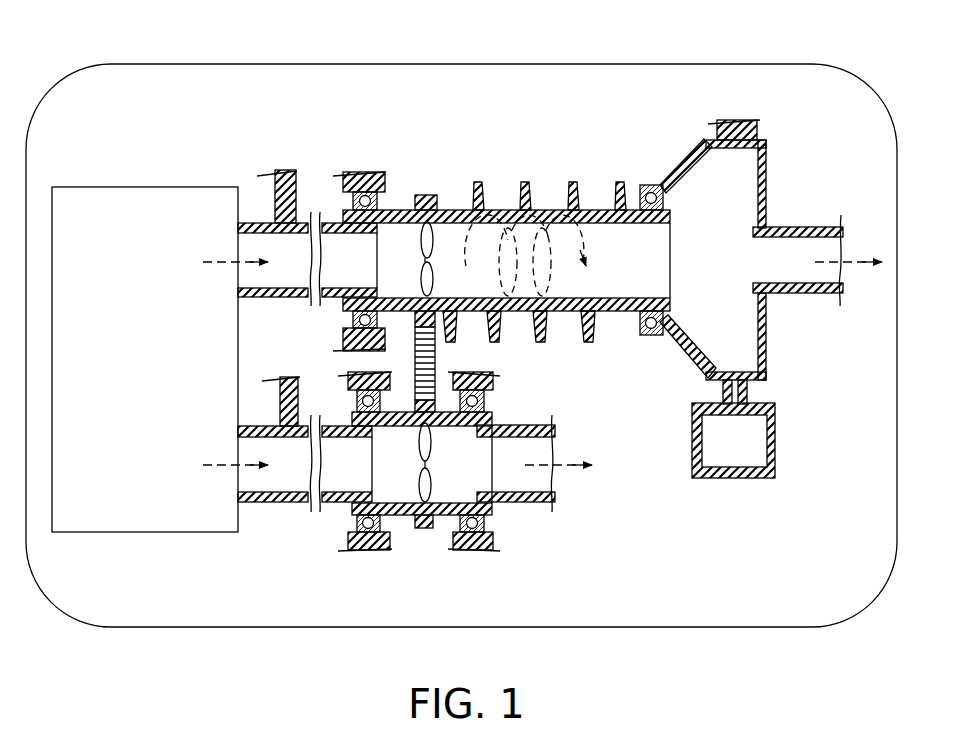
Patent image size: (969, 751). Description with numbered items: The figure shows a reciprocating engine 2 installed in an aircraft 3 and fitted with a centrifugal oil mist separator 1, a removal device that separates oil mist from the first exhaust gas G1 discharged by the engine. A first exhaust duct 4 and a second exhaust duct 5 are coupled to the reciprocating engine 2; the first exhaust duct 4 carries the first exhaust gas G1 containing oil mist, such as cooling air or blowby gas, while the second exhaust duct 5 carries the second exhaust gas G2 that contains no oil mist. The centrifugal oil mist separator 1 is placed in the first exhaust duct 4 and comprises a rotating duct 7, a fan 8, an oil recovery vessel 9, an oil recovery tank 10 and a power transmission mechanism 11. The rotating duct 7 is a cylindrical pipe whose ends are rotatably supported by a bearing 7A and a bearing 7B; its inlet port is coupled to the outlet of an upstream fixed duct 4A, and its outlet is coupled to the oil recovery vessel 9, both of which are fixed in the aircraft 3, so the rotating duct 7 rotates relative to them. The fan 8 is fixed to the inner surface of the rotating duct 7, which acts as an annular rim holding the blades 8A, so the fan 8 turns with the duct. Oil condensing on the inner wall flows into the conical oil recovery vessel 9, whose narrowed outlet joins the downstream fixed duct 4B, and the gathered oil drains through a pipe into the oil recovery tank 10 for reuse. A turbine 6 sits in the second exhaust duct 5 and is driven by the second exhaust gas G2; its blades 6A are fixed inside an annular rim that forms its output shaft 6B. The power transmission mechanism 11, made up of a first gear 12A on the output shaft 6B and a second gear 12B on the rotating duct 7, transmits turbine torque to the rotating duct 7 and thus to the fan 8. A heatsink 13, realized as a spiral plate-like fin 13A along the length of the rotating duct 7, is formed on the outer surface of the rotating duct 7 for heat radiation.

The centrifugal oil mist separator 1 is at (551, 172).
The reciprocating engine 2 is at (178, 187).
The aircraft 3 is at (203, 64).
The first exhaust duct 4 is at (259, 222).
The fixed duct 4A is at (317, 211).
The fixed duct 4B is at (815, 227).
The second exhaust duct 5 is at (285, 503).
The turbine 6 is at (400, 518).
The blades of the turbine 6A is at (433, 444).
The output shaft of the turbine 6B is at (444, 410).
The rotating duct 7 is at (502, 210).
The bearing 7A is at (353, 321).
The bearing 7B is at (638, 325).
The fan 8 is at (436, 258).
The blades of the fan 8A is at (421, 242).
The oil recovery vessel 9 is at (767, 342).
The oil recovery tank 10 is at (777, 442).
The power transmission mechanism 11 is at (413, 364).
The first gear 12A is at (423, 528).
The second gear 12B is at (427, 195).
The heatsink 13 is at (547, 342).
The fin 13A is at (580, 330).
The first exhaust gas G1 is at (218, 263).
The second exhaust gas G2 is at (218, 466).